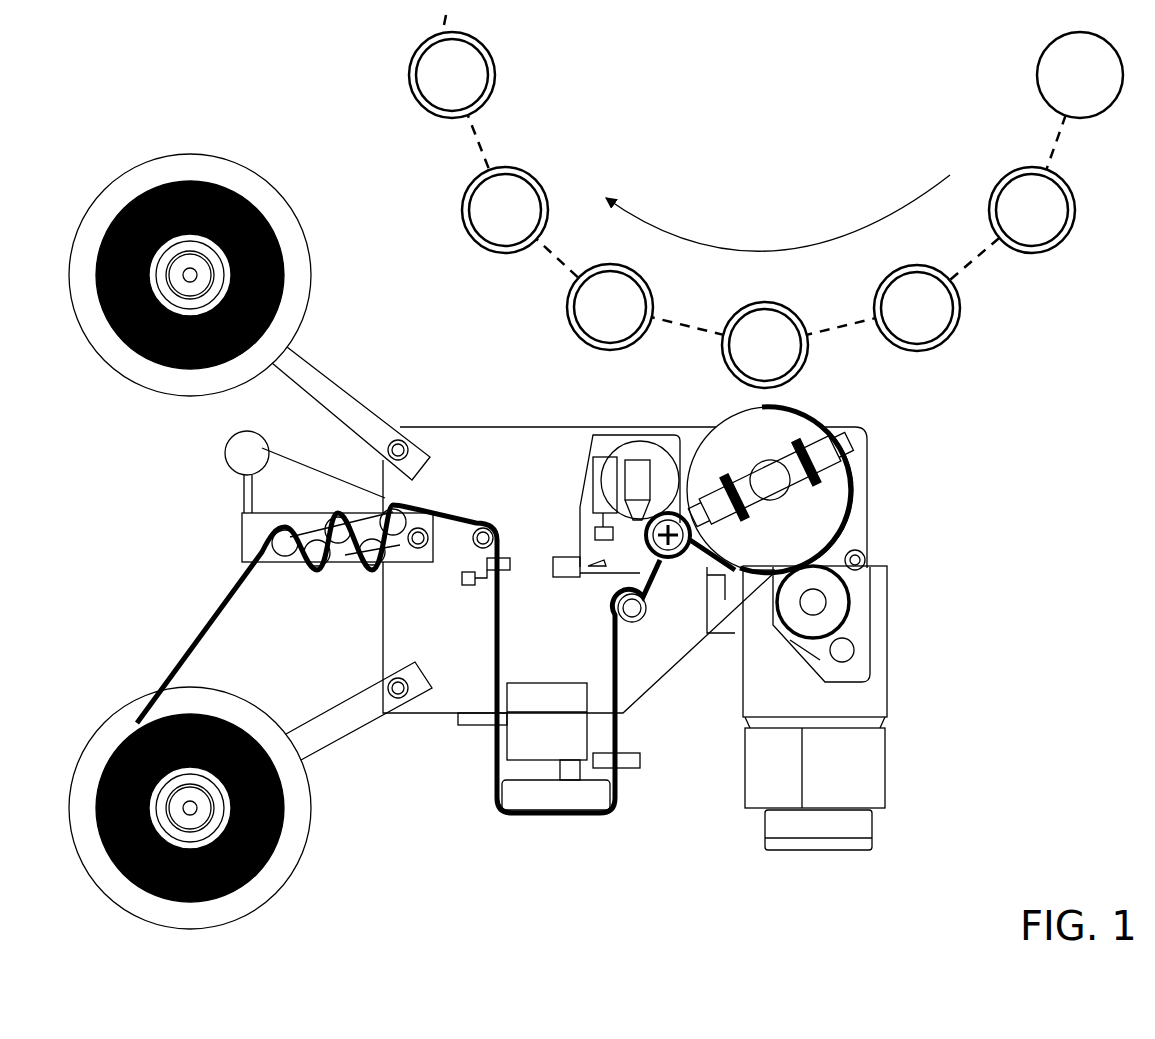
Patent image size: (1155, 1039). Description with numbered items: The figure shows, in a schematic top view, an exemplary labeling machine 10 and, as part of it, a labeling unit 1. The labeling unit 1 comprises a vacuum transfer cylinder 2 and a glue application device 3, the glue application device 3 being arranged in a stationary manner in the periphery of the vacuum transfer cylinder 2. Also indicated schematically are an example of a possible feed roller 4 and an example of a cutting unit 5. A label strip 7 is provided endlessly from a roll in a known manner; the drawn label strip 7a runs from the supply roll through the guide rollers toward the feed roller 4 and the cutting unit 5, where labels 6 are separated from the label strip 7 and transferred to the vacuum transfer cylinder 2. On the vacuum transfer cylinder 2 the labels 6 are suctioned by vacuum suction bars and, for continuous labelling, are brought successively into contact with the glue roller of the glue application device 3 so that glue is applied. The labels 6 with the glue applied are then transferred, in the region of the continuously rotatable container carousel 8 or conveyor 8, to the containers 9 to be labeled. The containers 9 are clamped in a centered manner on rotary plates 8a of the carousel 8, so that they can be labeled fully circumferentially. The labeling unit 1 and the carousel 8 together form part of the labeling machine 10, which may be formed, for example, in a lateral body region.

The labeling unit 1 is at (413, 363).
The vacuum transfer cylinder 2 is at (765, 448).
The glue application device 3 is at (840, 600).
The feed roller 4 is at (675, 572).
The cutting unit 5 is at (573, 466).
The labels 6 is at (838, 406).
The label strip 7 is at (498, 643).
The label web 7a is at (192, 644).
The container carousel 8 is at (788, 126).
The rotary plates 8a is at (1042, 70).
The containers 9 is at (778, 325).
The labeling machine 10 is at (1135, 638).